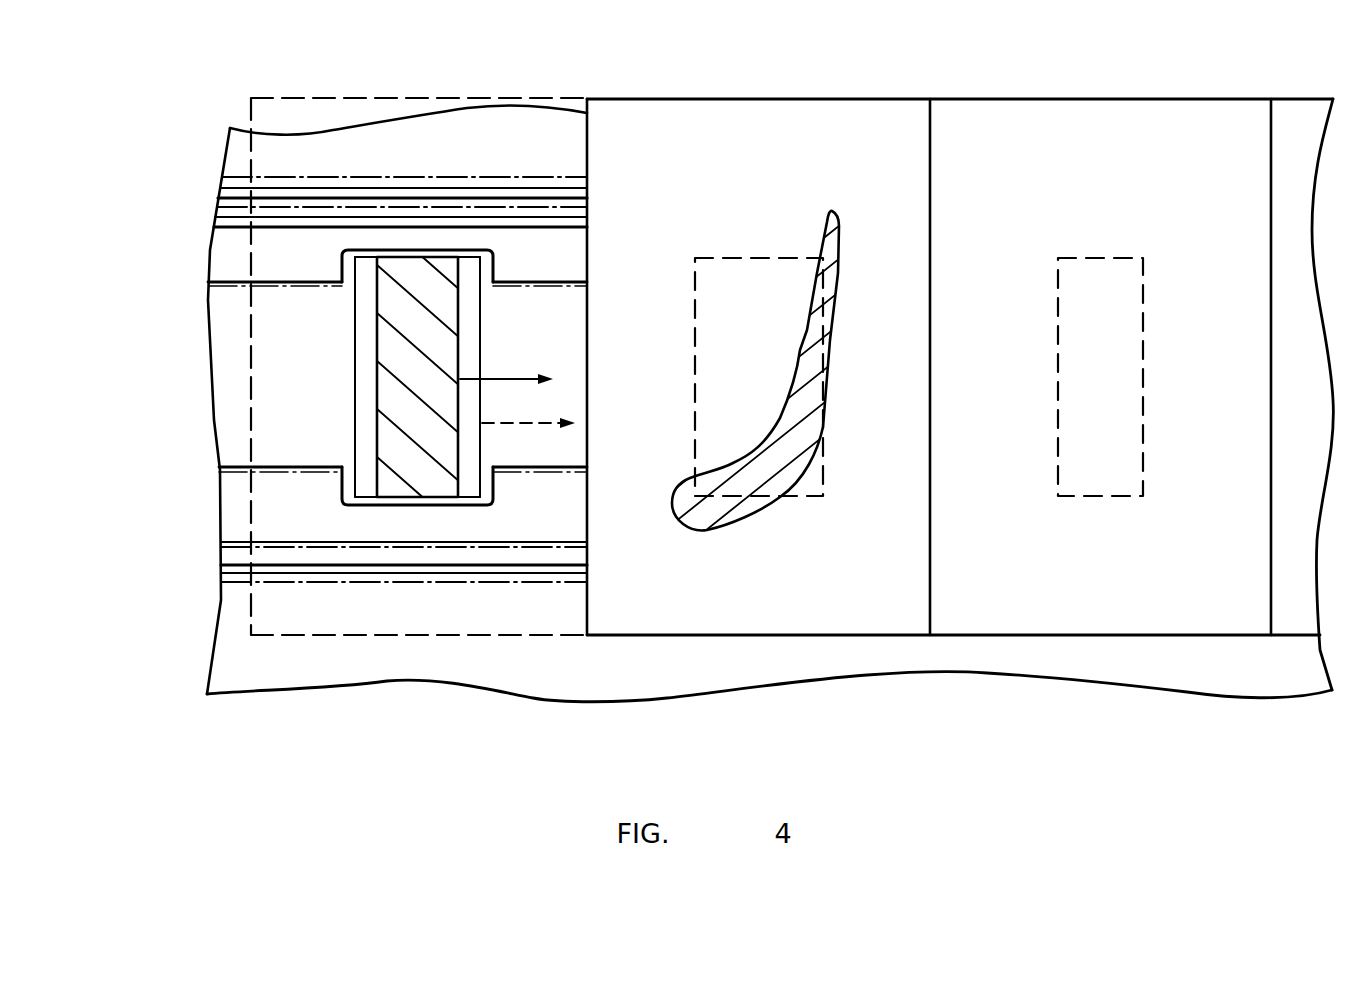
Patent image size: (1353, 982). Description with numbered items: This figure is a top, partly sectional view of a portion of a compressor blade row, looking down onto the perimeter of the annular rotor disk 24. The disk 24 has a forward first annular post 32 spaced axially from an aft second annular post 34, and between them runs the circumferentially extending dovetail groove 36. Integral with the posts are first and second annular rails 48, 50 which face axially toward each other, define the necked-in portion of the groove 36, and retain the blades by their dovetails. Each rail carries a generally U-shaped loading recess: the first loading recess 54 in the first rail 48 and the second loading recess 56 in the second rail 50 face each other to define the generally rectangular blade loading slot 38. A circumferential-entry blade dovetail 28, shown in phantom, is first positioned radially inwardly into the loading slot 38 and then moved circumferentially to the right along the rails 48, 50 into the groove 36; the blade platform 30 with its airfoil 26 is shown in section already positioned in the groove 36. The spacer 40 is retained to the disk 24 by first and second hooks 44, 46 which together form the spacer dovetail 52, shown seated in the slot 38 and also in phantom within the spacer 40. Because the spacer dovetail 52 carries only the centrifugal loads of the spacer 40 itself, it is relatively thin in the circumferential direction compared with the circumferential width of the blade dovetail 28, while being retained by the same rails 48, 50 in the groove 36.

The rotor disk 24 is at (232, 180).
The airfoil 26 is at (790, 402).
The circumferential-entry dovetail 28 is at (353, 333).
The blade platform 30 is at (800, 98).
The first annular post 32 is at (220, 515).
The second annular post 34 is at (210, 252).
The dovetail groove 36 is at (230, 396).
The blade loading slot 38 is at (326, 258).
The spacer 40 is at (484, 85).
The first hook 44 is at (450, 504).
The second hook 46 is at (452, 253).
The first annular rail 48 is at (235, 467).
The second annular rail 50 is at (228, 283).
The spacer dovetail 52 is at (400, 456).
The first loading recess 54 is at (441, 507).
The second loading recess 56 is at (420, 250).